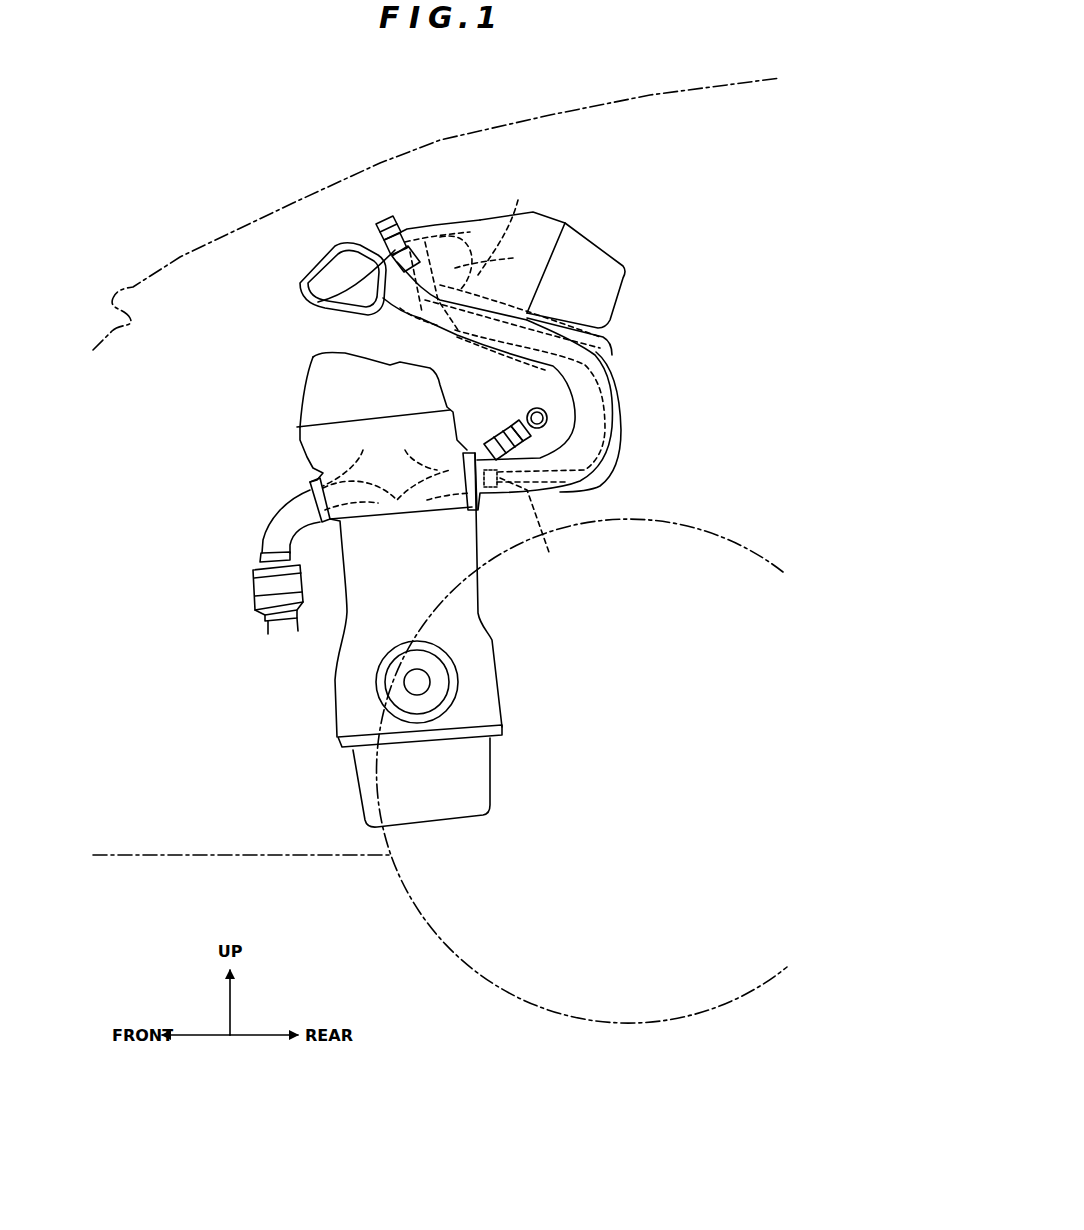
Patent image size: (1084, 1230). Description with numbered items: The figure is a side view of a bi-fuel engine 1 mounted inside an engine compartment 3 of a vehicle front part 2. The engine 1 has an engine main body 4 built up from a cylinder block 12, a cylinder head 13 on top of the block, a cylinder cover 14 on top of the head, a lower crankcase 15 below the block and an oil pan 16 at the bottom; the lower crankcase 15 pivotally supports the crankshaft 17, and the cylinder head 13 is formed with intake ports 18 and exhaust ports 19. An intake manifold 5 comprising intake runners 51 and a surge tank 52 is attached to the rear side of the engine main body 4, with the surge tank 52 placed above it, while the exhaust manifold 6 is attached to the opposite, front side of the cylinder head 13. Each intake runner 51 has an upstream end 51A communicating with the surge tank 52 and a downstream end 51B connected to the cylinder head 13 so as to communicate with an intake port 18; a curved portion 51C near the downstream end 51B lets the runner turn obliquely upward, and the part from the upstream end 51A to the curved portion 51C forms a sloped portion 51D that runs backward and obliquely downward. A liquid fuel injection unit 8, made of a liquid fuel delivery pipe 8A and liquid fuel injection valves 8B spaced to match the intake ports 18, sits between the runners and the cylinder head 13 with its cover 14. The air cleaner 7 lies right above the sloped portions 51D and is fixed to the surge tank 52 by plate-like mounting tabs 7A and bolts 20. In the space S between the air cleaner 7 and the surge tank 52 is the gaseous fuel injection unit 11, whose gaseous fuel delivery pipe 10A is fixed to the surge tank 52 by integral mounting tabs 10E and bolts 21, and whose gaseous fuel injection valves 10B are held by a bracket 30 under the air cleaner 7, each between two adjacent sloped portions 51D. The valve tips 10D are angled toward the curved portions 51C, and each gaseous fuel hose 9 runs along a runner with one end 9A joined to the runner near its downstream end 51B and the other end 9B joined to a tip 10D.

The engine 1 is at (591, 166).
The vehicle front part 2 is at (438, 141).
The engine compartment 3 is at (280, 238).
The engine main body 4 is at (296, 447).
The intake manifold 5 is at (646, 358).
The exhaust manifold 6 is at (273, 523).
The air cleaner 7 is at (598, 238).
The mounting tabs 7A is at (407, 236).
The liquid fuel injection unit 8 is at (506, 412).
The liquid fuel delivery pipe 8A is at (533, 407).
The liquid fuel injection valves 8B is at (498, 436).
The gaseous fuel hoses 9 is at (613, 472).
The one end of gaseous fuel hose 9A is at (525, 525).
The other end of gaseous fuel hose 9B is at (512, 319).
The gaseous fuel delivery pipe 10A is at (408, 265).
The gaseous fuel injection valves 10B is at (497, 255).
The tips 10D is at (440, 330).
The mounting tabs 10E is at (444, 236).
The gaseous fuel injection unit 11 is at (502, 225).
The cylinder block 12 is at (345, 612).
The cylinder head 13 is at (318, 452).
The cylinder cover 14 is at (302, 397).
The lower crankcase 15 is at (345, 698).
The oil pan 16 is at (465, 768).
The crankshaft 17 is at (417, 682).
The intake ports 18 is at (431, 463).
The exhaust ports 19 is at (386, 470).
The bolts 20 is at (392, 221).
The bolts 21 is at (386, 224).
The bracket 30 is at (416, 326).
The intake runners 51 is at (598, 348).
The upstream ends 51A is at (358, 352).
The downstream ends 51B is at (479, 516).
The curved portion 51C is at (612, 420).
The sloped portion 51D is at (542, 337).
The surge tank 52 is at (333, 240).
The space S is at (350, 245).